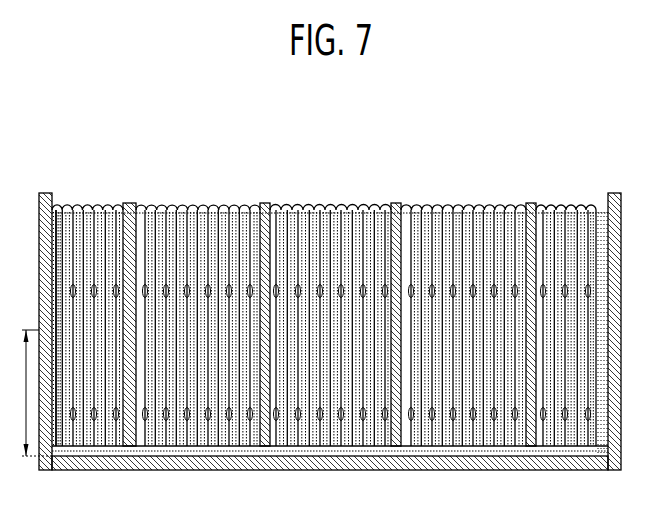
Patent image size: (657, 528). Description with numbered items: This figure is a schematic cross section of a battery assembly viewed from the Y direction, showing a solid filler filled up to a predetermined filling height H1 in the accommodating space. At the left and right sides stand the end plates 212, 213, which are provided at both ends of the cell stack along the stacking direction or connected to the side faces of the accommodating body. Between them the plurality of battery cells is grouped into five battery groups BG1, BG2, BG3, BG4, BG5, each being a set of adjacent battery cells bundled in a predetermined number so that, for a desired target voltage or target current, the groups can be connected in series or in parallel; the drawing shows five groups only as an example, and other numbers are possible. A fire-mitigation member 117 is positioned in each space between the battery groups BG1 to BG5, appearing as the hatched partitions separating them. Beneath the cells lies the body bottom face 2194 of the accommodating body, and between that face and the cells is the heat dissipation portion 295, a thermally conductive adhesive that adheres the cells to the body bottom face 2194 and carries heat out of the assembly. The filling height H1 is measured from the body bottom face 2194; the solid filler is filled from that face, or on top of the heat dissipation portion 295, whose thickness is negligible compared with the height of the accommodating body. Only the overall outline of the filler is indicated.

The end plate 212 is at (42, 185).
The end plate 213 is at (603, 185).
The body bottom face 2194 is at (379, 462).
The heat dissipation portion 295 is at (478, 446).
The fire-mitigation member 117 is at (122, 195).
The battery group BG1 is at (53, 190).
The battery group BG2 is at (245, 190).
The battery group BG3 is at (280, 190).
The battery group BG4 is at (500, 190).
The battery group BG5 is at (535, 190).
The filling height H1 is at (30, 393).